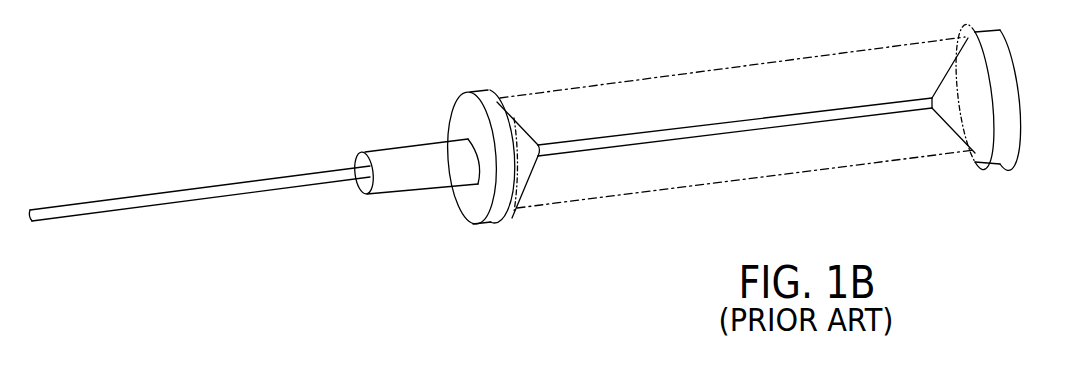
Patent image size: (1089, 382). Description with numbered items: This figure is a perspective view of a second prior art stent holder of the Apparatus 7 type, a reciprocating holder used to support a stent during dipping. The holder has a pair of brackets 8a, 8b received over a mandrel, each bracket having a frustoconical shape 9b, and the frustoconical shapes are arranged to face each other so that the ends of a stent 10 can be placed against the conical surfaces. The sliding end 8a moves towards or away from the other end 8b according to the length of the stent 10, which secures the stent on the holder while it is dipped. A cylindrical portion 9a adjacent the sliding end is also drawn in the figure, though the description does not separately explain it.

The Apparatus 7-type reciprocating holder 7 is at (292, 188).
The needle hub 9a is at (450, 142).
The sliding end bracket 8a is at (475, 235).
The frustoconical shape 9b is at (513, 120).
The stent 10 is at (632, 207).
The other end bracket 8b is at (998, 174).